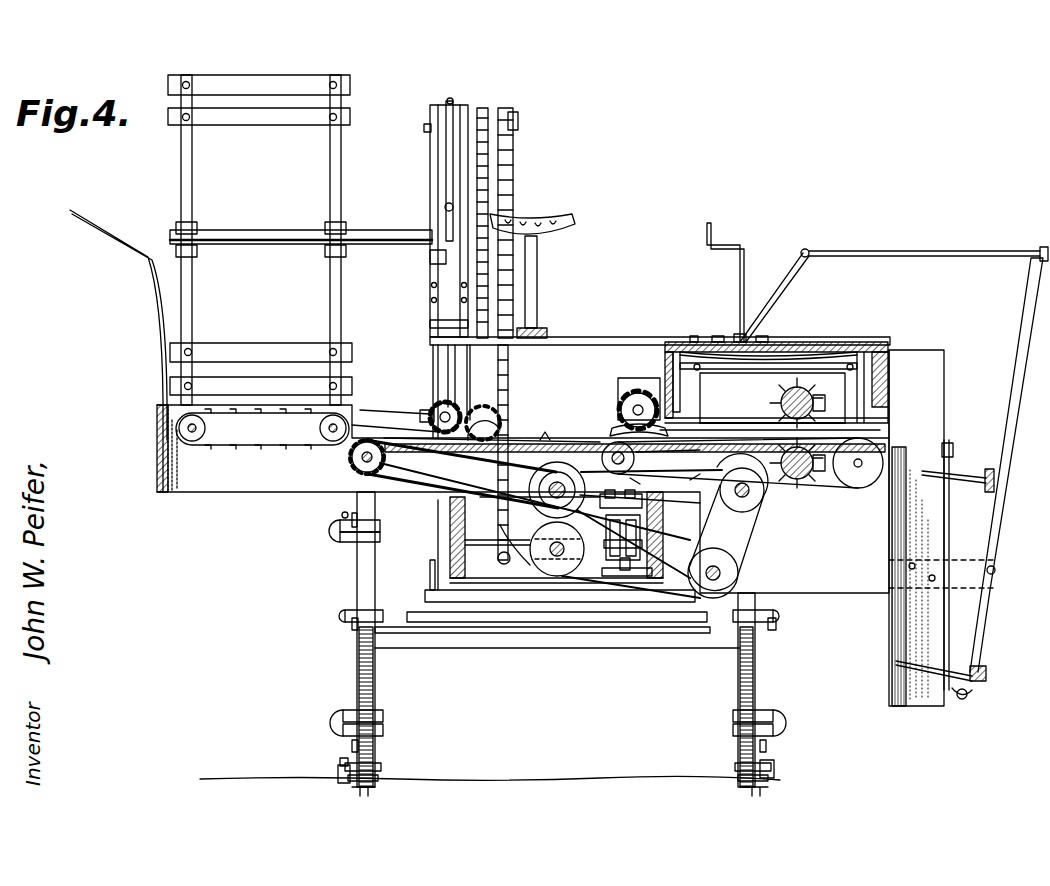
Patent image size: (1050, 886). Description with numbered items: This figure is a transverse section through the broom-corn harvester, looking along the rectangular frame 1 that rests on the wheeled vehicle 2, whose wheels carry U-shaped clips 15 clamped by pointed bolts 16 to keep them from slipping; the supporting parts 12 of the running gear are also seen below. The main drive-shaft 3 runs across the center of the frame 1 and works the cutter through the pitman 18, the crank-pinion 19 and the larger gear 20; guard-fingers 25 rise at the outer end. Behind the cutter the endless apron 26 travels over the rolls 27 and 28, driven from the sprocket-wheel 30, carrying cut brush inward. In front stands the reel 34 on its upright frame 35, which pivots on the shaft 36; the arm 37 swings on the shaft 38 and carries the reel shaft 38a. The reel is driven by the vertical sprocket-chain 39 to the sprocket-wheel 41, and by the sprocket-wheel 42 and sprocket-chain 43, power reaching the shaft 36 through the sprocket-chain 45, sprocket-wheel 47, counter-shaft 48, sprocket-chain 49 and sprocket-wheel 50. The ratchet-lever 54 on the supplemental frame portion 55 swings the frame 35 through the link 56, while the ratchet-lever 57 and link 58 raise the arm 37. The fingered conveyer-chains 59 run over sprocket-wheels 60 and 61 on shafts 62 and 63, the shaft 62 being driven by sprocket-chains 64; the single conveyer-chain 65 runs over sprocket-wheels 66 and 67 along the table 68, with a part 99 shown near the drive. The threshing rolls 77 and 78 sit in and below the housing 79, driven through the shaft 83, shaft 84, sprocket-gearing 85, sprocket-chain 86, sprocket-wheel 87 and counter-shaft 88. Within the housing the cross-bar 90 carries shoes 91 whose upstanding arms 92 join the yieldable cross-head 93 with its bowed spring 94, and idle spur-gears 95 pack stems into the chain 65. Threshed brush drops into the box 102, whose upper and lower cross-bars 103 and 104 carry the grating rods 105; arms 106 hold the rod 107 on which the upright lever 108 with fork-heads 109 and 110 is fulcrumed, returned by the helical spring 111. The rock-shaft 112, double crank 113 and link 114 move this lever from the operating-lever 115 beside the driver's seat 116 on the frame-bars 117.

The rectangular frame 1 is at (240, 480).
The vehicle 2 is at (438, 555).
The main drive-shaft 3 is at (542, 470).
The leg 12 is at (356, 595).
The U-shaped clips 15 is at (340, 538).
The pointed bolts 16 is at (344, 514).
The pitman 18 is at (400, 412).
The crank-pinion 19 is at (432, 408).
The gear 20 is at (483, 418).
The guard-fingers 25 is at (155, 288).
The endless apron 26 is at (245, 447).
The roll 27 is at (205, 428).
The roll 28 is at (320, 424).
The sprocket-wheel 30 is at (440, 550).
The reel 34 is at (260, 240).
The upright frame 35 is at (434, 104).
The shaft 36 is at (426, 545).
The forwardly-projected arm 37 is at (455, 105).
The shaft 38 is at (424, 126).
The reel shaft 38a is at (380, 232).
The sprocket-chain 39 is at (514, 200).
The sprocket-wheel 41 is at (510, 110).
The sprocket-wheel 42 is at (483, 107).
The sprocket-chain 43 is at (512, 170).
The sprocket-chain 45 is at (642, 576).
The sprocket-wheel 47 is at (628, 560).
The counter-shaft 48 is at (612, 548).
The sprocket-chain 49 is at (621, 499).
The sprocket-wheel 50 is at (624, 570).
The ratchet-lever 54 is at (470, 268).
The supplemental frame portion 55 is at (430, 330).
The link or rod 56 is at (459, 382).
The ratchet-lever 57 is at (445, 205).
The pivotal rod or link 58 is at (450, 98).
The fingered conveyer-chains 59 is at (396, 429).
The sprocket-wheel 60 is at (350, 460).
The sprocket-wheel 61 is at (636, 458).
The shaft 62 is at (376, 478).
The shaft 63 is at (690, 481).
The sprocket-chains 64 is at (420, 490).
The fingered conveyer-chain 65 is at (676, 460).
The sprocket-wheel 66 is at (580, 496).
The sprocket-wheel 67 is at (858, 463).
The table 68 is at (540, 438).
The upper threshing roll 77 is at (782, 400).
The lower threshing roll 78 is at (800, 492).
The housing 79 is at (806, 343).
The shaft 83 is at (742, 490).
The shaft 84 is at (713, 573).
The sprocket-gearing 85 is at (750, 540).
The sprocket-chain 86 is at (683, 510).
The sprocket-wheel 87 is at (557, 549).
The counter-shaft 88 is at (545, 553).
The cross-bar 90 is at (745, 440).
The shoe 91 is at (768, 430).
The upstanding arms 92 is at (728, 404).
The cross-head 93 is at (768, 369).
The bowed spring 94 is at (697, 352).
The idle spur-gears 95 is at (618, 408).
The shaft 99 is at (648, 481).
The box or chute 102 is at (888, 612).
The upper cross-bar 103 is at (942, 450).
The lower cross-bar 104 is at (944, 706).
The wires or rods 105 is at (950, 540).
The arms 106 is at (958, 562).
The rod or bar 107 is at (997, 568).
The upright lever 108 is at (1008, 456).
The upper fork-head 109 is at (970, 476).
The lower fork-head 110 is at (986, 672).
The helical spring 111 is at (968, 698).
The rock-shaft 112 is at (748, 340).
The double crank 113 is at (782, 283).
The link connection 114 is at (858, 257).
The operating-lever 115 is at (712, 235).
The driver's seat 116 is at (560, 232).
The frame-bars 117 is at (586, 344).